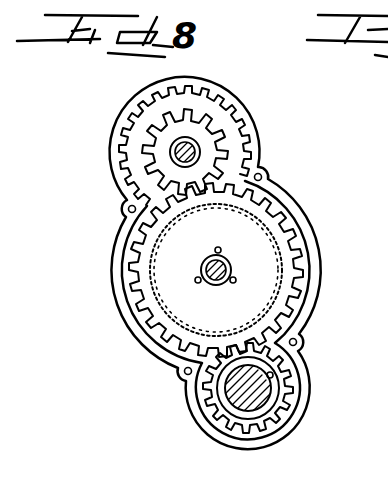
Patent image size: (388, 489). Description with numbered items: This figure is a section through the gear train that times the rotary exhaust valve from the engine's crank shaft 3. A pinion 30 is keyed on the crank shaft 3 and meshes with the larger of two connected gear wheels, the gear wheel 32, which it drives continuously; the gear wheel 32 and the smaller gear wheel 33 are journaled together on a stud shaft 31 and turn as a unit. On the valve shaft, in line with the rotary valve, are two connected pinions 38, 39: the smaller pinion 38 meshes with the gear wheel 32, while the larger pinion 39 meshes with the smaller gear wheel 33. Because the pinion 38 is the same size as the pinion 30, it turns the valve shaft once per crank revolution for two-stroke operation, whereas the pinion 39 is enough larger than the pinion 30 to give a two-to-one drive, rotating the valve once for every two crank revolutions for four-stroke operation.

The crank shaft 3 is at (255, 395).
The pinion 30 is at (285, 400).
The stud shaft 31 is at (225, 272).
The gear wheel 32 is at (282, 240).
The gear wheel 33 is at (303, 307).
The pinion 38 is at (205, 136).
The pinion 39 is at (228, 150).